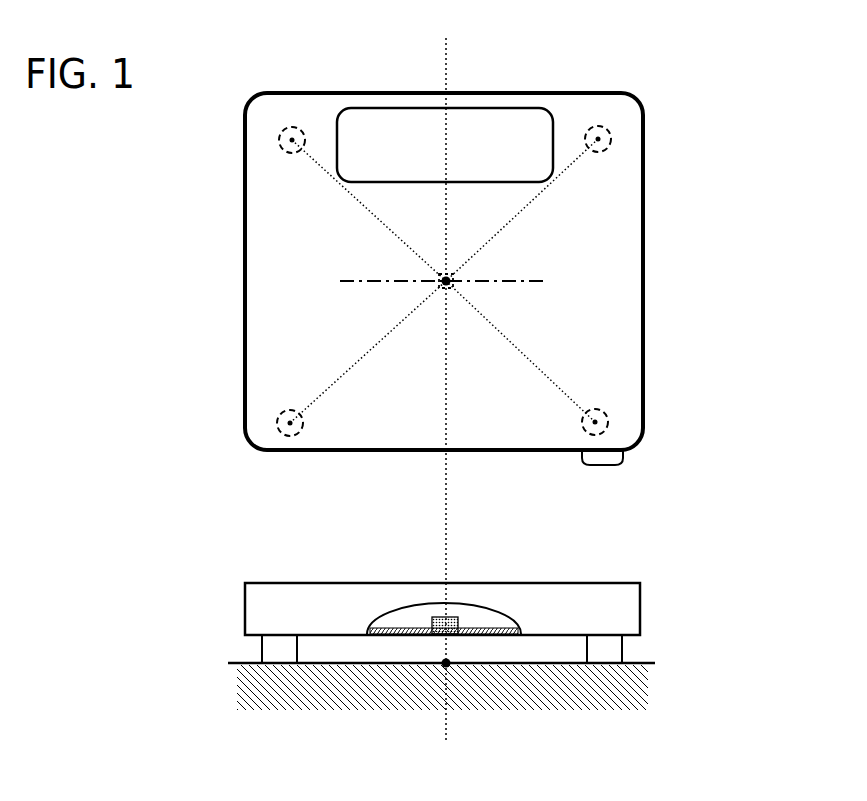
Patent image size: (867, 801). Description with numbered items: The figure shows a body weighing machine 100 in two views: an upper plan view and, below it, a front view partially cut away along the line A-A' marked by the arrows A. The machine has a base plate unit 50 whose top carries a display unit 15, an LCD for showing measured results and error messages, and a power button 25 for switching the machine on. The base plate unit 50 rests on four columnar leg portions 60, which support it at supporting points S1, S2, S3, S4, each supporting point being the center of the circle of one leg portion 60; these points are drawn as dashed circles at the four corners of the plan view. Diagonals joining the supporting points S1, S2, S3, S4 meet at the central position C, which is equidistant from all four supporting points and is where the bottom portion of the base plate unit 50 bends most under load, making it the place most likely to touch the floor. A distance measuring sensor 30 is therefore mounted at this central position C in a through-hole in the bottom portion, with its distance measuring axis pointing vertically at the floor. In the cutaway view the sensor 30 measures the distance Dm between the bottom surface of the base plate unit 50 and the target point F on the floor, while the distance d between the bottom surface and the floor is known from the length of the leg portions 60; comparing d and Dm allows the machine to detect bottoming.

The body weighing machine 100 is at (749, 111).
The base plate unit 50 is at (643, 337).
The display unit 15 is at (510, 128).
The leg portions 60 is at (288, 140).
The power button 25 is at (610, 463).
The distance measuring sensor 30 is at (448, 284).
The supporting point S1 is at (283, 140).
The supporting point S2 is at (280, 428).
The supporting point S3 is at (600, 418).
The supporting point S4 is at (600, 136).
The central position C is at (446, 280).
The line A-A' A is at (343, 262).
The distance between bottom surface of base plate unit and floor d is at (320, 641).
The distance Dm is at (446, 641).
The target point F is at (446, 663).